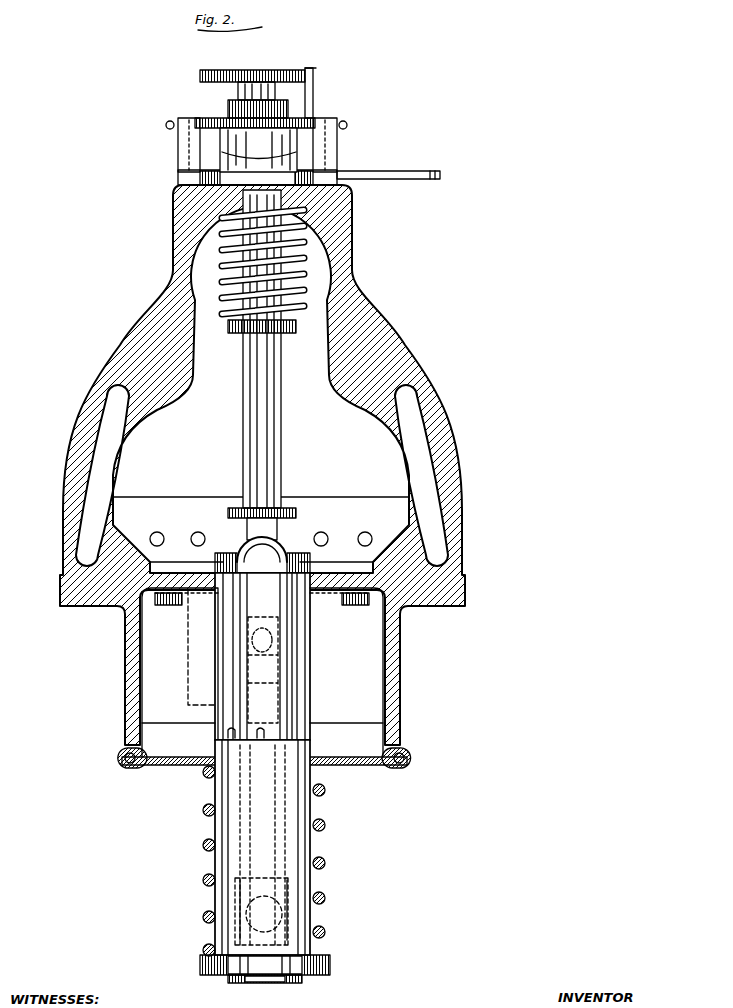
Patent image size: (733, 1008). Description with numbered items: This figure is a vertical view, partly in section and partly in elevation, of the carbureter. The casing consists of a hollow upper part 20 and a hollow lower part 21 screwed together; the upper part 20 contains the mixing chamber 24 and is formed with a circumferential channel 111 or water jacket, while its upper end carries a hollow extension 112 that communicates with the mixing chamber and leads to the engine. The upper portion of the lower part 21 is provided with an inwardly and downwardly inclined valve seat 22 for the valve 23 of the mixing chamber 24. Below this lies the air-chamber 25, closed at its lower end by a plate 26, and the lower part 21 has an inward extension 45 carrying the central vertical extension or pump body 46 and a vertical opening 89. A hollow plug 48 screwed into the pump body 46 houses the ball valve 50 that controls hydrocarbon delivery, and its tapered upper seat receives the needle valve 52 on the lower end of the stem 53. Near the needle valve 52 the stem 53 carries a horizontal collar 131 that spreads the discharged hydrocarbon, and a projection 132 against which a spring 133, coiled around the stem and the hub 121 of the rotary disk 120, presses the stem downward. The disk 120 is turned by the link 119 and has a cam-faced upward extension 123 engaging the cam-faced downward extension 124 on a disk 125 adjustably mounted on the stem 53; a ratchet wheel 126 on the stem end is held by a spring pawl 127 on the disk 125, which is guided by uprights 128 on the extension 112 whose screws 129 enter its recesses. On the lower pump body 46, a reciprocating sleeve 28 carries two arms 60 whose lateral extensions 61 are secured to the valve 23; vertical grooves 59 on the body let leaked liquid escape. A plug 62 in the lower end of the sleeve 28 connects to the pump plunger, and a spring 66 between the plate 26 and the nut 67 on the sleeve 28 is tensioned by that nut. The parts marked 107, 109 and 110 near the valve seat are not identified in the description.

The upper part of the casing 20 is at (62, 475).
The lower part of the casing 21 is at (125, 653).
The valve seat 22 is at (62, 588).
The valve 23 is at (288, 640).
The mixing chamber 24 is at (192, 435).
The air-chamber 25 is at (356, 695).
The plate 26 is at (362, 764).
The reciprocating sleeve 28 is at (222, 823).
The inward extension 45 is at (158, 721).
The pump body 46 is at (290, 687).
The hollow plug 48 is at (290, 547).
The ball valve 50 is at (343, 647).
The needle valve 52 is at (250, 548).
The valve stem 53 is at (247, 378).
The vertical grooves 59 is at (265, 736).
The arms 60 is at (216, 642).
The lateral extension 61 is at (197, 602).
The plug 62 is at (255, 974).
The spring 66 is at (206, 878).
The nut 67 is at (199, 959).
The vertical opening 89 is at (190, 682).
The seat 107 is at (168, 568).
The seat plate 109 is at (123, 543).
The ports 110 is at (198, 533).
The circumferential channel 111 is at (258, 426).
The hollow extension 112 is at (350, 248).
The link 119 is at (400, 172).
The rotary disk 120 is at (172, 218).
The hub 121 is at (234, 246).
The cam-faced upward extension 123 is at (222, 162).
The cam-faced downward extension 124 is at (222, 140).
The disk 125 is at (208, 120).
The ratchet wheel 126 is at (268, 72).
The spring pawl 127 is at (312, 90).
The uprights 128 is at (178, 137).
The screws 129 is at (172, 123).
The collar 131 is at (240, 503).
The projection 132 is at (281, 334).
The spring 133 is at (232, 292).